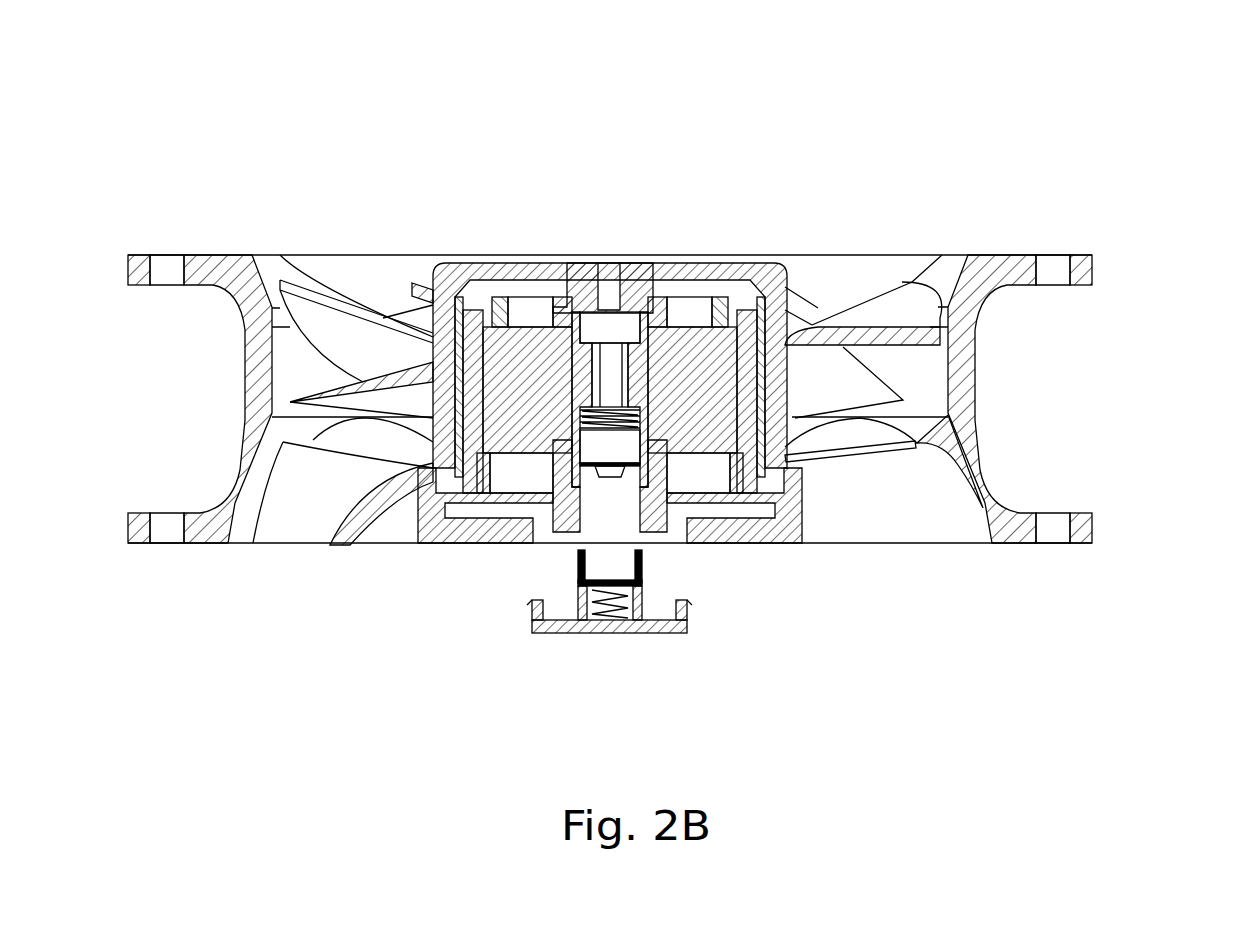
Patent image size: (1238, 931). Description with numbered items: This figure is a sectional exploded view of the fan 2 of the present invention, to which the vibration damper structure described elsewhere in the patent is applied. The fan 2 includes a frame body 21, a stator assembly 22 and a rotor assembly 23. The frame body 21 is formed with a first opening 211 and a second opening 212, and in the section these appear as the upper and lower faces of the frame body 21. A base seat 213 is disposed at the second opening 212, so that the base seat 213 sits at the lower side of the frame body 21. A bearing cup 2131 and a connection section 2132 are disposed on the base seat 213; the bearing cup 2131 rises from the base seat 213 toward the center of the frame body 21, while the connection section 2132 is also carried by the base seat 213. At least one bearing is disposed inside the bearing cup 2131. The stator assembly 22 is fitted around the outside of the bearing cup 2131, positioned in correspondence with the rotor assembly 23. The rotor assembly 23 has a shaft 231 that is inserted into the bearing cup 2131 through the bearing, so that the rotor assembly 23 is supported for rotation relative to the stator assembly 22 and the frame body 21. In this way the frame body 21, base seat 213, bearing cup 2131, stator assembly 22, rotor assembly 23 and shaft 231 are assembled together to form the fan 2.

The fan 2 is at (1083, 123).
The frame body 21 is at (219, 255).
The first opening 211 is at (392, 254).
The second opening 212 is at (300, 543).
The base seat 213 is at (450, 540).
The bearing cup 2131 is at (652, 330).
The connection section 2132 is at (682, 530).
The stator assembly 22 is at (530, 357).
The rotor assembly 23 is at (574, 275).
The shaft 231 is at (608, 283).